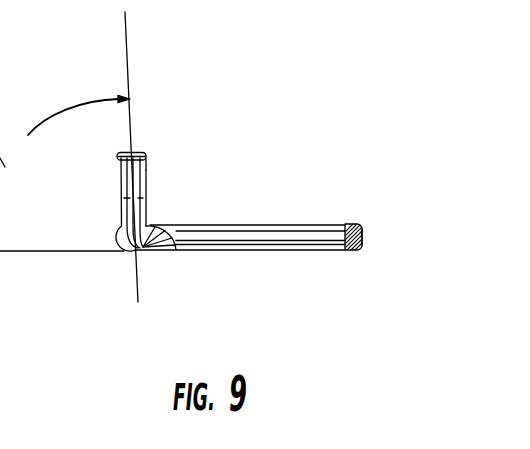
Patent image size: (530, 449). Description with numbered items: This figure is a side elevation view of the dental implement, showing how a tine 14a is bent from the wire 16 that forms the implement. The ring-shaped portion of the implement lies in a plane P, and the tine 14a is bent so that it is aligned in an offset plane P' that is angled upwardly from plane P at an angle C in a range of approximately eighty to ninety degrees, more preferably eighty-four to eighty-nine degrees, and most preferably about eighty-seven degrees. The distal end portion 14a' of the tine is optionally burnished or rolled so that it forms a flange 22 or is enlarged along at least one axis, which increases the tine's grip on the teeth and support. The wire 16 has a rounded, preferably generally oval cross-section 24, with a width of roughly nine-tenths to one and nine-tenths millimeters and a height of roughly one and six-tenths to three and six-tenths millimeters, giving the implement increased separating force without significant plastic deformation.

The tine 14a is at (169, 204).
The distal end portion of tine 14a' is at (215, 129).
The flange 22 is at (120, 160).
The wire 16 is at (348, 224).
The oval cross-section 24 is at (362, 236).
The plane P is at (62, 294).
The offset plane P' is at (172, 156).
The angle C is at (65, 131).